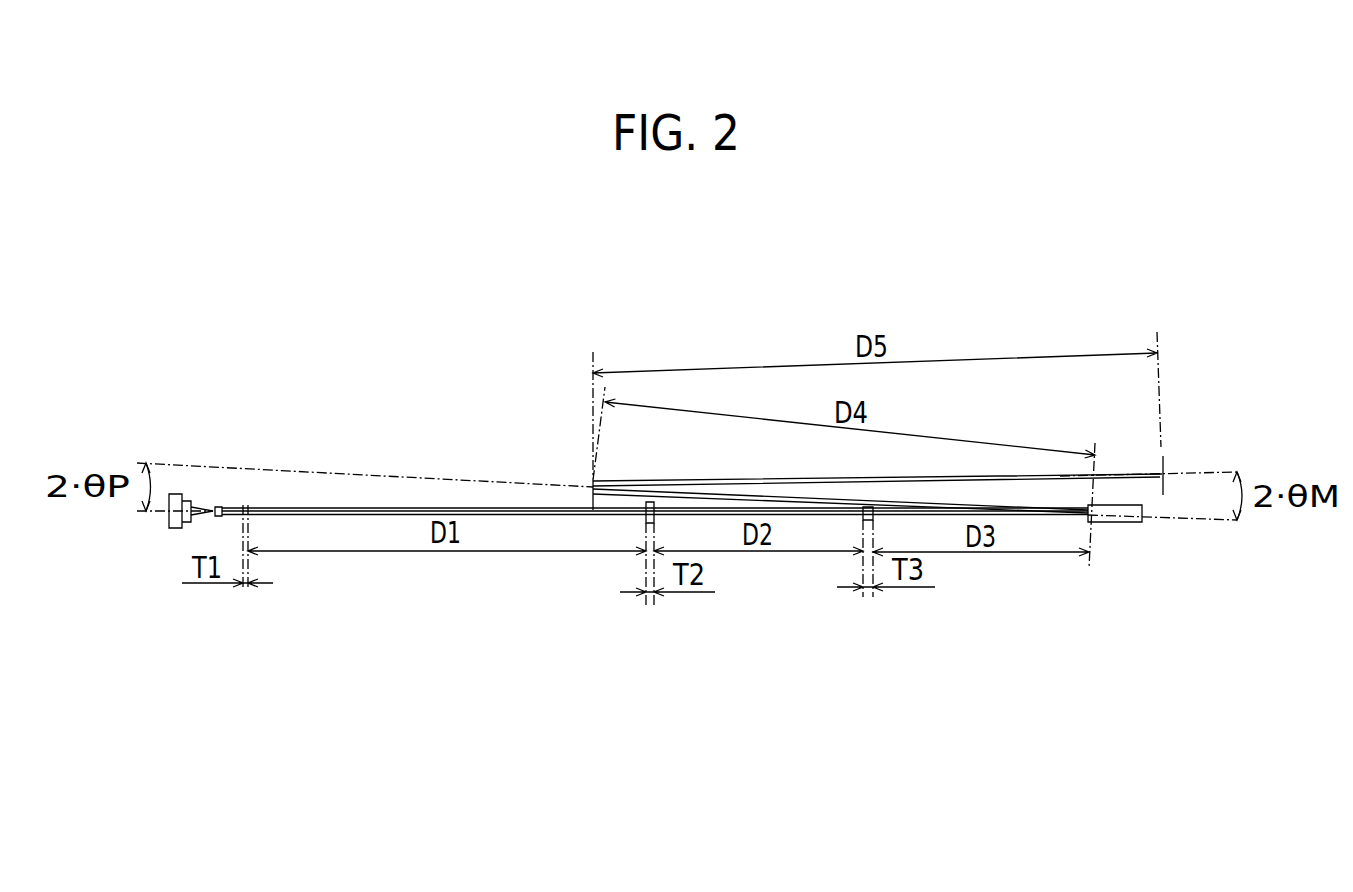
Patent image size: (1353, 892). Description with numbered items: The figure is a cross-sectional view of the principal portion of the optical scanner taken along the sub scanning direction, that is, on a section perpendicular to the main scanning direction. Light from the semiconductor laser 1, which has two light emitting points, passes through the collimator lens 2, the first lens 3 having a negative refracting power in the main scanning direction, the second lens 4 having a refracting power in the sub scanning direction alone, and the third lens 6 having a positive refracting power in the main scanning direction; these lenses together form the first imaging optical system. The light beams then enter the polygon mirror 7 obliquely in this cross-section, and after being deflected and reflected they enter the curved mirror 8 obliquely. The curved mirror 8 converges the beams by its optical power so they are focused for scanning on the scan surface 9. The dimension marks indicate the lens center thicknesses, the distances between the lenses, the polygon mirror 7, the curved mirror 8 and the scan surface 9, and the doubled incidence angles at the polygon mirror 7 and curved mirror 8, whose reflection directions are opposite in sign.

The semiconductor laser 1 is at (169, 527).
The collimator lens 2 is at (218, 507).
The first lens 3 is at (247, 505).
The second lens 4 is at (643, 521).
The third lens 6 is at (863, 519).
The polygon mirror 7 is at (1112, 522).
The curved mirror 8 is at (593, 480).
The scan surface 9 is at (1163, 460).